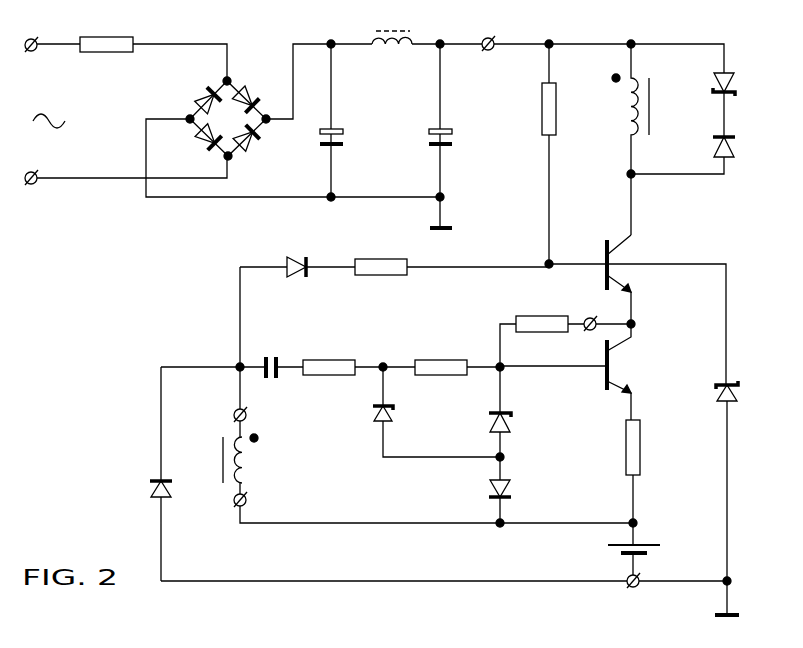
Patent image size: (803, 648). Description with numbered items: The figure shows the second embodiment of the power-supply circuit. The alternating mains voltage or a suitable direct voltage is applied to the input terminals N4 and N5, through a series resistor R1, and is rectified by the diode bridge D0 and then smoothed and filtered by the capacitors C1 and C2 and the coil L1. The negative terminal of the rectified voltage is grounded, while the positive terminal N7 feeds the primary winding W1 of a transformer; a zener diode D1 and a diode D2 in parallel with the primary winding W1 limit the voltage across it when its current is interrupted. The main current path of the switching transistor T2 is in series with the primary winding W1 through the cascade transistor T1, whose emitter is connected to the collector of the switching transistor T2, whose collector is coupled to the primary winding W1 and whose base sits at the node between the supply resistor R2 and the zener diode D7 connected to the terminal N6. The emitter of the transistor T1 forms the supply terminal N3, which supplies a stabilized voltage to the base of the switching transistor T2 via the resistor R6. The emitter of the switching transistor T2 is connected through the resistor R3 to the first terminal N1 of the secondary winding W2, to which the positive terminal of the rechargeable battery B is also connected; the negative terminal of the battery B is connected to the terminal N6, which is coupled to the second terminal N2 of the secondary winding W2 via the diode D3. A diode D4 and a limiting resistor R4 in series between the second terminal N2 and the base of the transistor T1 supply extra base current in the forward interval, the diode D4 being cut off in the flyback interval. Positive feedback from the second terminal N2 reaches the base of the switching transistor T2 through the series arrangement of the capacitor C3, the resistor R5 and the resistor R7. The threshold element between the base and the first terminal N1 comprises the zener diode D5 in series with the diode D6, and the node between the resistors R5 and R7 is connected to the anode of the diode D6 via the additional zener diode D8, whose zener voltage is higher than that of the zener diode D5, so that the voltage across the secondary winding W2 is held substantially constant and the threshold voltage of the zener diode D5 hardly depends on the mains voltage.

The input terminal N4 is at (30, 60).
The input terminal N5 is at (30, 193).
The resistor R1 is at (106, 31).
The diode bridge D0 is at (228, 118).
The capacitor C1 is at (345, 120).
The capacitor C2 is at (454, 120).
The coil L1 is at (392, 50).
The positive terminal N7 is at (495, 55).
The supply resistor R2 is at (563, 154).
The primary winding W1 is at (644, 139).
The zener diode D1 is at (740, 104).
The diode D2 is at (740, 145).
The cascade transistor T1 is at (630, 278).
The switching transistor T2 is at (577, 372).
The resistor R6 is at (542, 327).
The supply terminal N3 is at (602, 308).
The zener diode D7 is at (742, 498).
The resistor R3 is at (647, 471).
The rechargeable battery B is at (644, 549).
The terminal N6 is at (622, 595).
The diode D4 is at (317, 254).
The limiting resistor R4 is at (377, 253).
The capacitor C3 is at (273, 353).
The resistor R5 is at (329, 355).
The resistor R7 is at (441, 354).
The additional zener diode D8 is at (398, 417).
The zener diode D5 is at (513, 432).
The diode D6 is at (513, 491).
The second terminal N2 is at (257, 416).
The secondary winding W2 is at (251, 458).
The first terminal N1 is at (257, 505).
The diode D3 is at (147, 484).